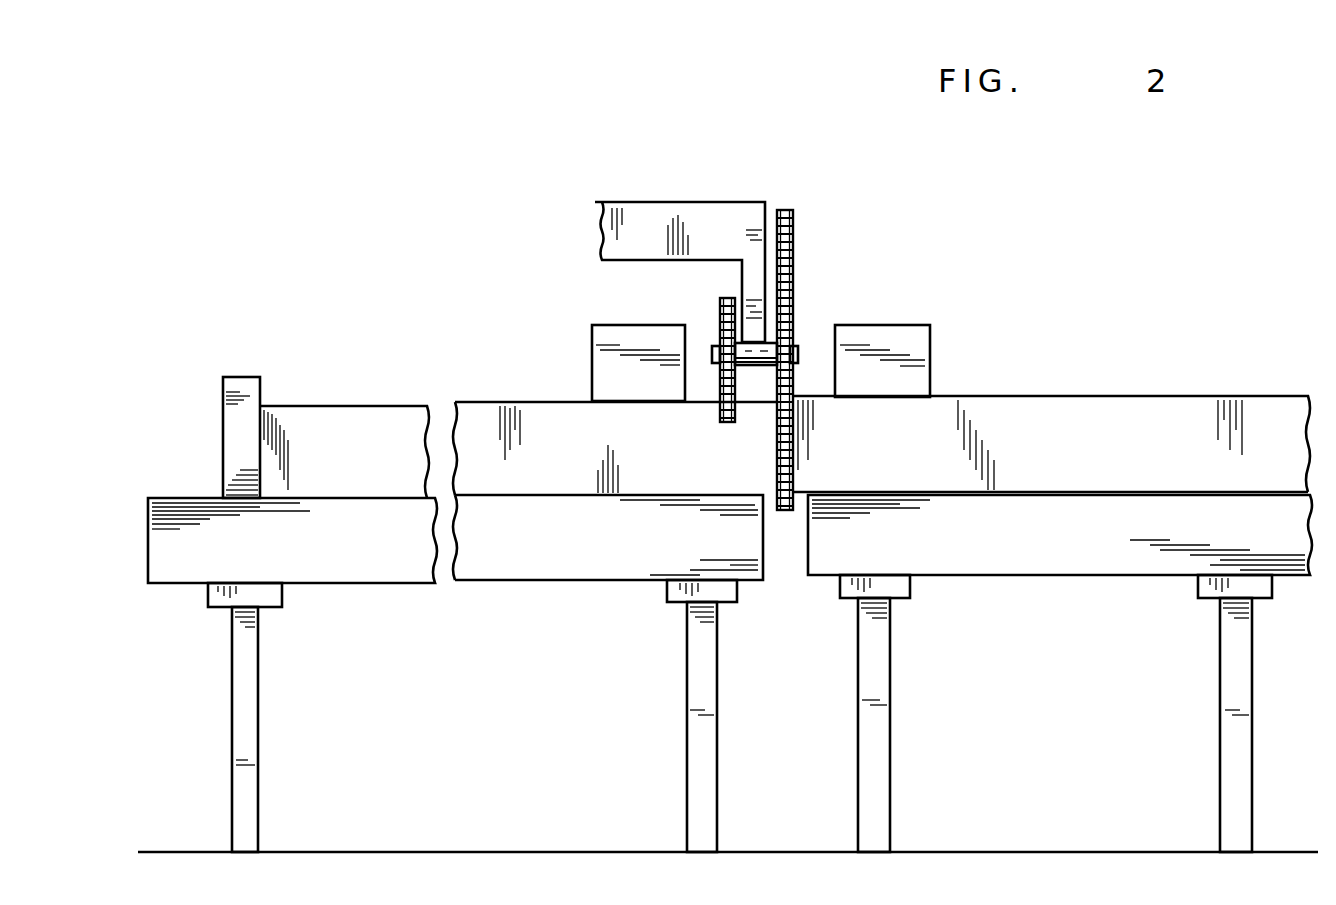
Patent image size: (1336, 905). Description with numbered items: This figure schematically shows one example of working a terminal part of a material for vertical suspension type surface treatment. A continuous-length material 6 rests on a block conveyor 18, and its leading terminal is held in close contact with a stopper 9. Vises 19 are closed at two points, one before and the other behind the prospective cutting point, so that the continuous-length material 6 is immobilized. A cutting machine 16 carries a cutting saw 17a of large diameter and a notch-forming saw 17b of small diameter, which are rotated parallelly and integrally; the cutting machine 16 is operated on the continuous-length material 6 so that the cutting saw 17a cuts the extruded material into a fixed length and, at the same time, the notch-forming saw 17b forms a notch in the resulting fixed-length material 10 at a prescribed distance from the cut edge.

The continuous-length material 6 is at (1053, 408).
The stopper 9 is at (259, 380).
The fixed-length material 10 is at (497, 417).
The cutting machine 16 is at (805, 238).
The cutting saw 17a is at (793, 272).
The notch-forming saw 17b is at (719, 306).
The block conveyor 18 is at (1082, 560).
The vises 19 is at (620, 338).